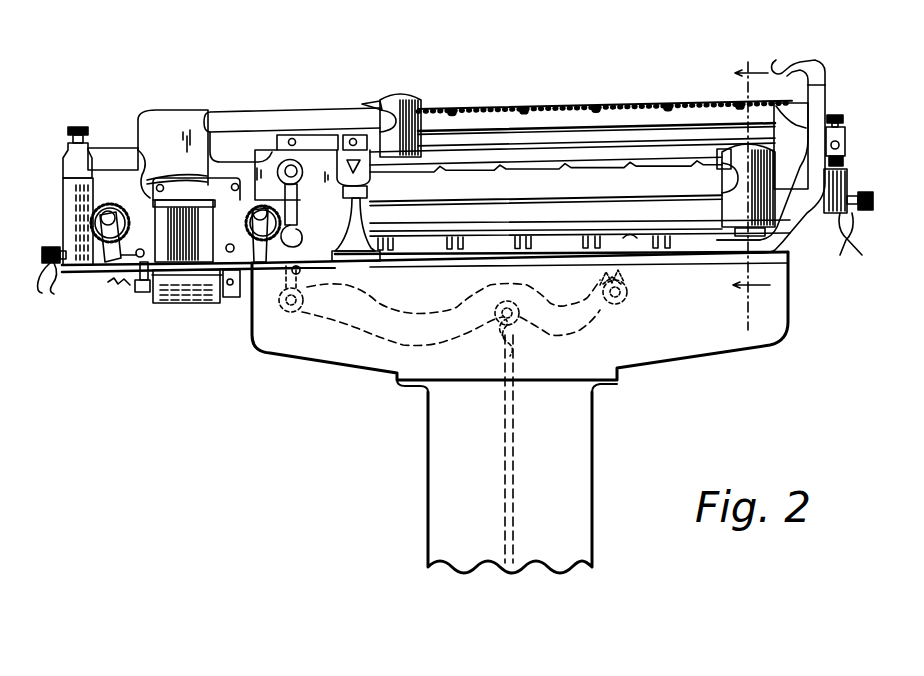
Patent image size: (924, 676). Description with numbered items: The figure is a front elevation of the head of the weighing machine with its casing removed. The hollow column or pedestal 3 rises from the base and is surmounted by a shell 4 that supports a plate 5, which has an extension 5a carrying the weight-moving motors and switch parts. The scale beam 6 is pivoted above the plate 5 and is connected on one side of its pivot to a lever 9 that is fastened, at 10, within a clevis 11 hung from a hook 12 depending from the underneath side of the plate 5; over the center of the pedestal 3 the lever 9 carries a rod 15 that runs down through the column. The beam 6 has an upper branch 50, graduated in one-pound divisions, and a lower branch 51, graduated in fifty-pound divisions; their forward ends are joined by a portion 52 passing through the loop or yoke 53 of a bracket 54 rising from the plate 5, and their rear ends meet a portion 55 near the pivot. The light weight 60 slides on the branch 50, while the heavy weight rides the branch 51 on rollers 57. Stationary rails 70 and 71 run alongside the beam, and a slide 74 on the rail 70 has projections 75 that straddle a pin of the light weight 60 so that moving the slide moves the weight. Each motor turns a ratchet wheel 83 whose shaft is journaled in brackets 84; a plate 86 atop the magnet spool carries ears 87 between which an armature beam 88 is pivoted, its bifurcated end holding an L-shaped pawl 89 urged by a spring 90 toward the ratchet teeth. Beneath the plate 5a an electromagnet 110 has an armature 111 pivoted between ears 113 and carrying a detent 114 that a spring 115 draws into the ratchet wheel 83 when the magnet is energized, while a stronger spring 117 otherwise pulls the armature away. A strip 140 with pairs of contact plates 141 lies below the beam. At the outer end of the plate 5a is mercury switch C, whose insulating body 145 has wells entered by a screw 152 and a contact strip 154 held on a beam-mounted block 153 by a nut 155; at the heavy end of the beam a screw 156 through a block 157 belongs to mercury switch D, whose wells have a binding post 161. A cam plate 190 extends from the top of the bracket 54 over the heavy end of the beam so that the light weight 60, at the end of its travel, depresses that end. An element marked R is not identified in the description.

The column or pedestal 3 is at (585, 450).
The shell 4 is at (733, 345).
The plate 5 is at (356, 264).
The extension of the plate 5a is at (107, 276).
The scale beam 6 is at (322, 165).
The lever 9 is at (448, 320).
The fastening point 10 is at (627, 299).
The clevis 11 is at (629, 290).
The hook 12 is at (630, 278).
The rod 15 is at (512, 410).
The upper branch of the scale beam 50 is at (645, 110).
The lower branch of the scale beam 51 is at (477, 188).
The connecting portion 52 is at (797, 110).
The loop or yoke 53 is at (826, 98).
The bracket 54 is at (795, 232).
The beam portion adjacent pivot 55 is at (173, 154).
The rollers 57 is at (724, 158).
The light weight 60 is at (422, 102).
The rail 70 is at (572, 141).
The rail 71 is at (580, 218).
The slide 74 is at (596, 136).
The projections 75 is at (362, 104).
The ratchet wheel 83 is at (122, 188).
The brackets 84 is at (303, 238).
The plate 86 is at (220, 100).
The ears 87 is at (352, 216).
The armature beam 88 is at (222, 178).
The L-shaped pawl 89 is at (157, 177).
The spring 90 is at (185, 178).
The electro-magnet 110 is at (173, 250).
The armature 111 is at (143, 267).
The ears 113 is at (285, 300).
The detent 114 is at (143, 292).
The spring 115 is at (245, 267).
The spring 117 is at (112, 282).
The strip 140 is at (561, 244).
The contact plates 141 is at (605, 244).
The body of insulating material 145 is at (64, 212).
The screw 152 is at (88, 133).
The block of insulating material 153 is at (113, 160).
The contact strip 154 is at (64, 172).
The nut 155 is at (70, 138).
The screw 156 is at (845, 162).
The block of insulating material 157 is at (845, 135).
The binding post 161 is at (874, 200).
The cam plate 190 is at (792, 64).
The mercury switch C is at (64, 190).
The mercury switch D is at (849, 186).
The relay R is at (166, 300).